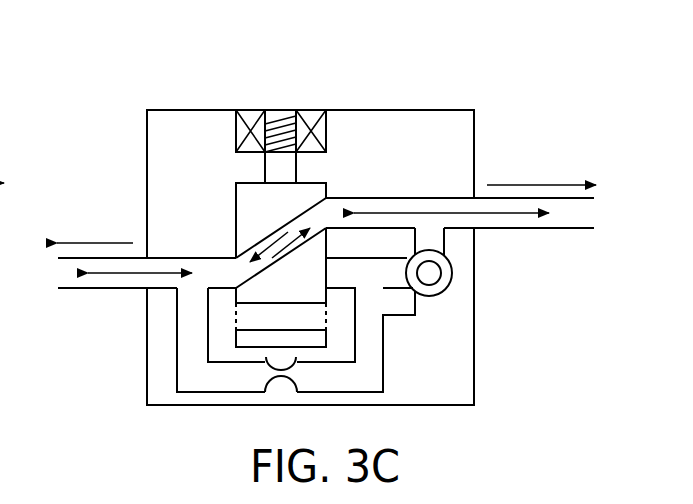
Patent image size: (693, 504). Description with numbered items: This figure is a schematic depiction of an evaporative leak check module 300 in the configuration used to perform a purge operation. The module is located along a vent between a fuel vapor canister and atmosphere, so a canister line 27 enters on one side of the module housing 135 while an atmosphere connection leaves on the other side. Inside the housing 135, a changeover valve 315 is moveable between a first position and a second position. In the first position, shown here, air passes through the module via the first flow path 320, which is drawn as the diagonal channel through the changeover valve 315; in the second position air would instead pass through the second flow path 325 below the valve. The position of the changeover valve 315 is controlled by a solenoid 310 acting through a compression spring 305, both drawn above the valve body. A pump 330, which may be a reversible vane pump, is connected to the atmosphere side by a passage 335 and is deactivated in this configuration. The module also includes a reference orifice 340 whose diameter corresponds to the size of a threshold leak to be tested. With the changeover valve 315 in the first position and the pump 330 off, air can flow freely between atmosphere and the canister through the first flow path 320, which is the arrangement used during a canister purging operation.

The valve assembly 300 is at (592, 110).
The housing 135 is at (178, 109).
The canister line 27 is at (103, 289).
The compression spring 305 is at (282, 109).
The solenoid 310 is at (310, 109).
The changeover valve 315 is at (244, 182).
The first flow path 320 is at (285, 224).
The second flow path 325 is at (319, 302).
The pump 330 is at (443, 289).
The passage 335 is at (417, 315).
The reference orifice 340 is at (302, 380).